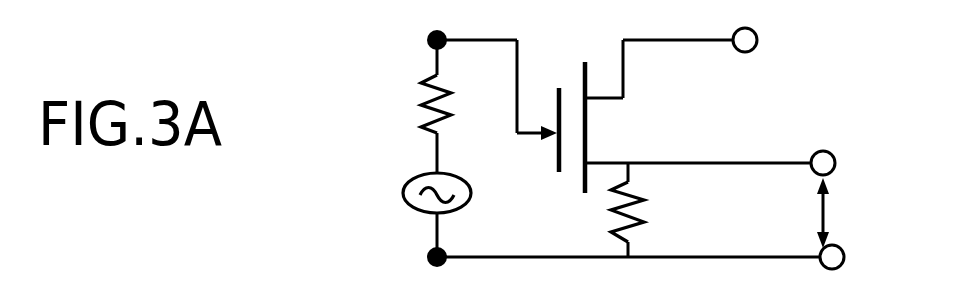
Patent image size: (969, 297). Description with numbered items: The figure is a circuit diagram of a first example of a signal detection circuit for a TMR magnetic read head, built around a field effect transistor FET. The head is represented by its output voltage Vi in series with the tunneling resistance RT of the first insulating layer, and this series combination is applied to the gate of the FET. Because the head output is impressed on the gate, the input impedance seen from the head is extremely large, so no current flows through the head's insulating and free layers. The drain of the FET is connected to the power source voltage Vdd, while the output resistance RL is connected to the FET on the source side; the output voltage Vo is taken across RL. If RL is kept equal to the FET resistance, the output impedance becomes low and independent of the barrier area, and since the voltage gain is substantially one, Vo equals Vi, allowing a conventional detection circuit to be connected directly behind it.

The tunneling resistance RT is at (404, 104).
The output voltage from the TMR head Vi is at (418, 193).
The field effect transistor FET is at (609, 127).
The output resistance RL is at (654, 212).
The power source voltage Vdd is at (772, 26).
The output voltage of the detection circuit Vo is at (854, 210).